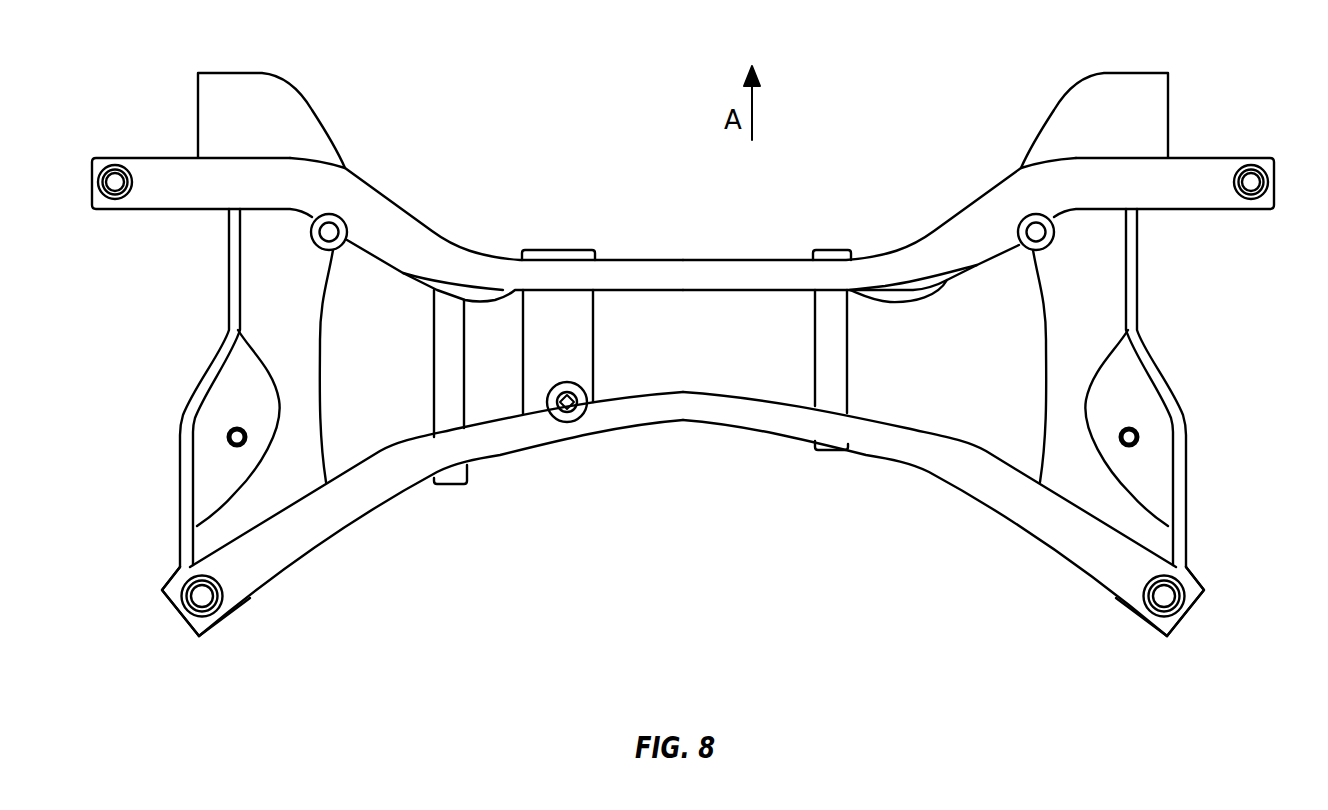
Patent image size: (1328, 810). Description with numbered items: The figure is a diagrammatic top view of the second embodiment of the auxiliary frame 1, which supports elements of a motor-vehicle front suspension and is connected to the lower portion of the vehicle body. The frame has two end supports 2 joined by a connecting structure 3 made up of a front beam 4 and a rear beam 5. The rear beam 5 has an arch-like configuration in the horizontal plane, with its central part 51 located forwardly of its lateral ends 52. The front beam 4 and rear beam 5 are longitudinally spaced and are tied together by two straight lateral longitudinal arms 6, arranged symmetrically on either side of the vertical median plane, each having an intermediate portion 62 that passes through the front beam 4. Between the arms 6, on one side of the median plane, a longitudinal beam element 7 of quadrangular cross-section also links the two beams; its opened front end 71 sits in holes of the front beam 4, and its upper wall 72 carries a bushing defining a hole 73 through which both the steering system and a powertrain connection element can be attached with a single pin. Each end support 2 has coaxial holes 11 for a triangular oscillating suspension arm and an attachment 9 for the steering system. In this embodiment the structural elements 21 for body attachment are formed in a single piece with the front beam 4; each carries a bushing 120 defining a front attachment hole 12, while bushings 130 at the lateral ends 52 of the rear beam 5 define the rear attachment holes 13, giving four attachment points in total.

The auxiliary frame 1 is at (682, 538).
The end support 2 is at (180, 342).
The connecting structure 3 is at (753, 490).
The front beam 4 is at (707, 257).
The rear beam 5 is at (683, 498).
The lateral longitudinal arm 6 is at (636, 387).
The longitudinal beam element 7 is at (578, 399).
The attachment 9 is at (322, 234).
The hole 11 is at (242, 450).
The hole 12 is at (680, 169).
The hole 13 is at (668, 633).
The structural element 21 is at (152, 193).
The central part 51 is at (632, 413).
The lateral end 52 is at (257, 562).
The intermediate portion 62 is at (447, 400).
The front end 71 is at (545, 248).
The upper wall 72 is at (547, 352).
The hole 73 is at (562, 418).
The bushing 120 is at (128, 167).
The bushing 130 is at (183, 593).